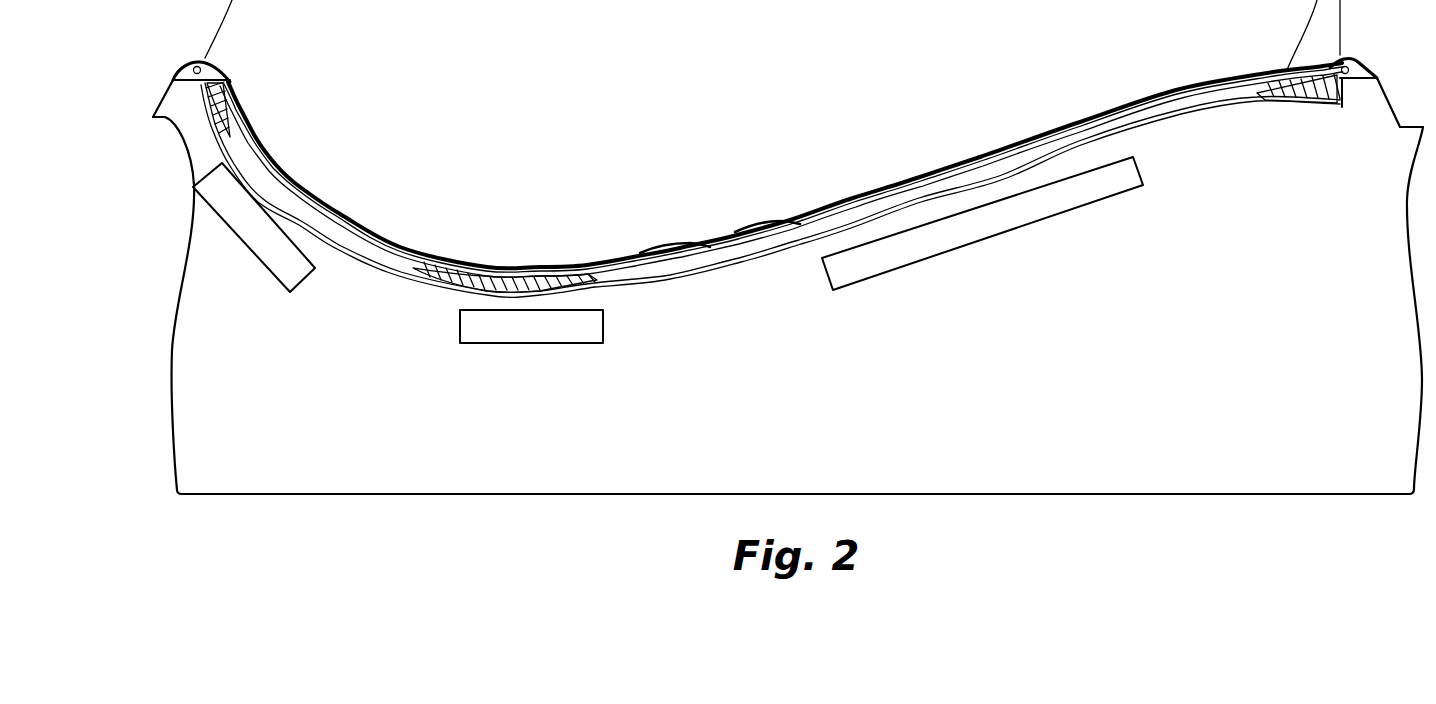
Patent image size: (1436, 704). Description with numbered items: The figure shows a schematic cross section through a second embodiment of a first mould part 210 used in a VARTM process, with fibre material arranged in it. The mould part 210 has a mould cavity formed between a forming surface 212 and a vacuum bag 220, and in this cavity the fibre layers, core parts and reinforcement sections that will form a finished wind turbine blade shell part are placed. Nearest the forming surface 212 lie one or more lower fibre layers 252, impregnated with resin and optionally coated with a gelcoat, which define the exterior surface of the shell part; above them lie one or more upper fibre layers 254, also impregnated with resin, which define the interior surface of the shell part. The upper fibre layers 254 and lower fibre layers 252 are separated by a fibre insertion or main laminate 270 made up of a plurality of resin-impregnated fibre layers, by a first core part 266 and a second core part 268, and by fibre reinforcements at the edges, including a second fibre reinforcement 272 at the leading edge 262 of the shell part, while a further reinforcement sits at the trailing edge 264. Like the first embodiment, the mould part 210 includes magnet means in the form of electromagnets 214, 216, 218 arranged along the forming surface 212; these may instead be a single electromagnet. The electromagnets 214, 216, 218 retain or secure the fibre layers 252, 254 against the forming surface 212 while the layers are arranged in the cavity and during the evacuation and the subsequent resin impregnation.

The first mould part 210 is at (895, 372).
The forming surface 212 is at (1258, 102).
The electromagnet 214 is at (283, 270).
The electromagnet 216 is at (557, 330).
The electromagnet 218 is at (1012, 217).
The vacuum bag 220 is at (660, 250).
The lower fibre layers 252 is at (1177, 123).
The upper fibre layers 254 is at (927, 170).
The leading edge 262 is at (178, 80).
The trailing edge 264 is at (1370, 73).
The first core part 266 is at (327, 230).
The second core part 268 is at (738, 252).
The main laminate 270 is at (536, 278).
The second fibre reinforcement 272 is at (200, 63).